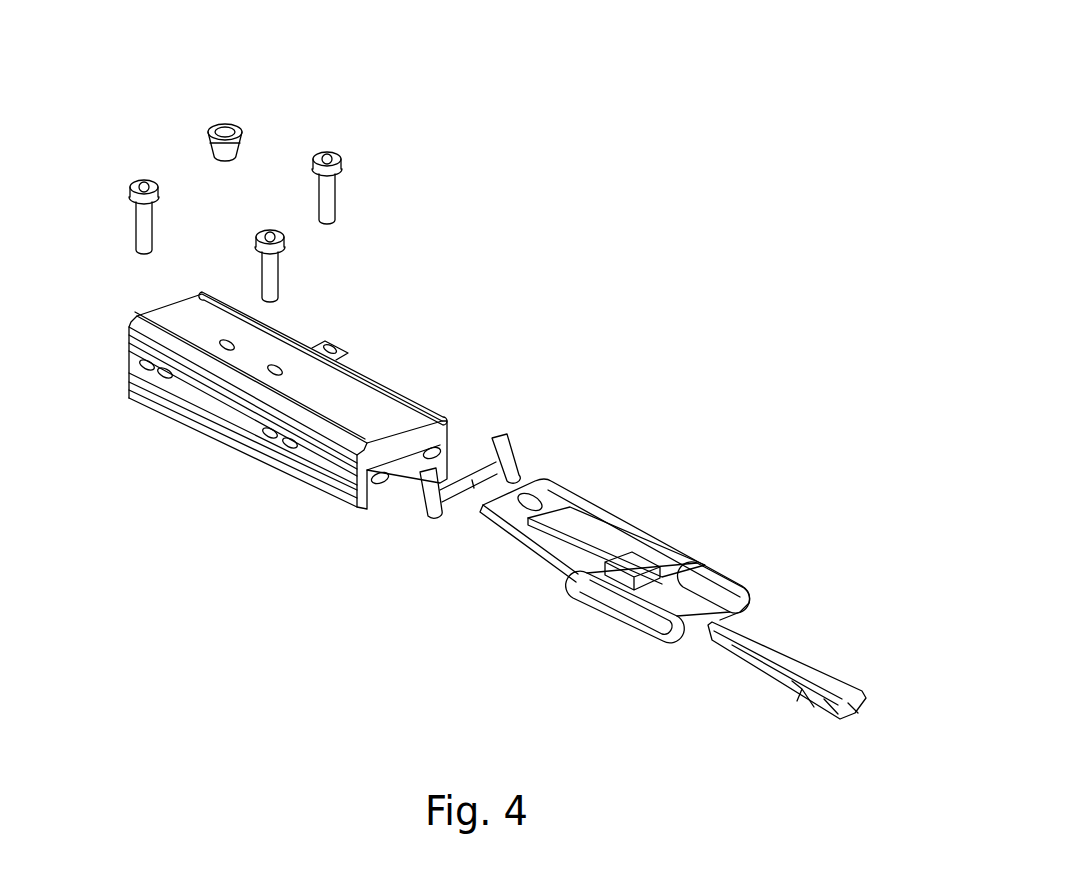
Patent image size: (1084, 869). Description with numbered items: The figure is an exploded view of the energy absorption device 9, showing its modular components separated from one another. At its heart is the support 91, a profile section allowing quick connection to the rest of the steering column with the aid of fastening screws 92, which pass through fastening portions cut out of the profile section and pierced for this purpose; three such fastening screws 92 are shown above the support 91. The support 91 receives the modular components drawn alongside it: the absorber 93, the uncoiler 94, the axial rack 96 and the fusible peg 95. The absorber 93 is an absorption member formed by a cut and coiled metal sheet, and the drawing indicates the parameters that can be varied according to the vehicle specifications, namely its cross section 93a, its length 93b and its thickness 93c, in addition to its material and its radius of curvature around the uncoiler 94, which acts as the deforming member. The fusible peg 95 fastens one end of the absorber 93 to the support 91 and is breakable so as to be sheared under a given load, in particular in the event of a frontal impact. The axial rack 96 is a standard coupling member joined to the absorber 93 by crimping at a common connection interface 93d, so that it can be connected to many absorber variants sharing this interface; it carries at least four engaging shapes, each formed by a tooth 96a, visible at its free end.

The absorption device 9 is at (637, 148).
The support 91 is at (380, 384).
The fastening screws 92 is at (280, 279).
The absorber 93 is at (610, 536).
The cross section 93a is at (718, 564).
The length 93b is at (404, 561).
The thickness 93c is at (547, 536).
The connection interface 93d is at (612, 560).
The uncoiler 94 is at (514, 451).
The fusible peg 95 is at (241, 129).
The axial rack 96 is at (776, 617).
The tooth 96a is at (802, 703).